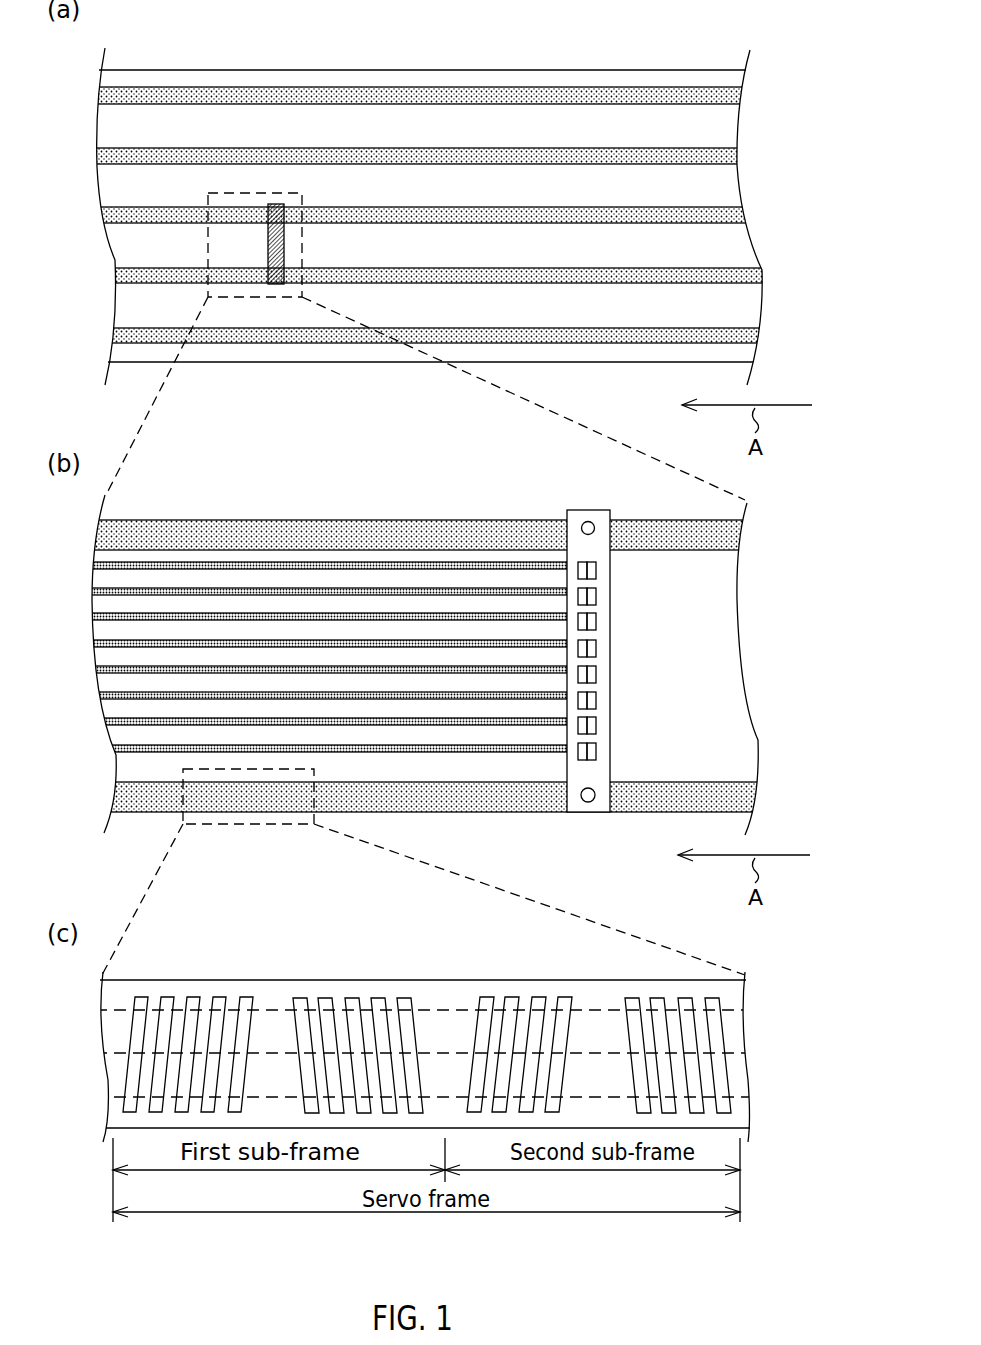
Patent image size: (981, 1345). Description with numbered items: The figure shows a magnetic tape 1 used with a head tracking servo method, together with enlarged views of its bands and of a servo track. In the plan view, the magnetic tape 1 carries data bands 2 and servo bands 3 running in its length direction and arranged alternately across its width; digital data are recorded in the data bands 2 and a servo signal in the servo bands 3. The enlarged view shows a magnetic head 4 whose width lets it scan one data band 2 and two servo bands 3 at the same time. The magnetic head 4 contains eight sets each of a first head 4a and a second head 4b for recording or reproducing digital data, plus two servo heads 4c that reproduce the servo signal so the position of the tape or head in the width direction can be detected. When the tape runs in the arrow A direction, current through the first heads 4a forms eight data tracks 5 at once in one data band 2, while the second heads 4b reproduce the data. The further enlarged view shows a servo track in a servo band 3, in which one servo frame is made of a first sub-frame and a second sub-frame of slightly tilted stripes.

The magnetic tape 1 is at (553, 57).
The data band 2 is at (725, 128).
The servo band 3 is at (727, 97).
The magnetic head 4 is at (268, 247).
The first head 4a is at (592, 562).
The second head 4b is at (583, 562).
The servo head 4c is at (592, 523).
The data track 5 is at (98, 594).